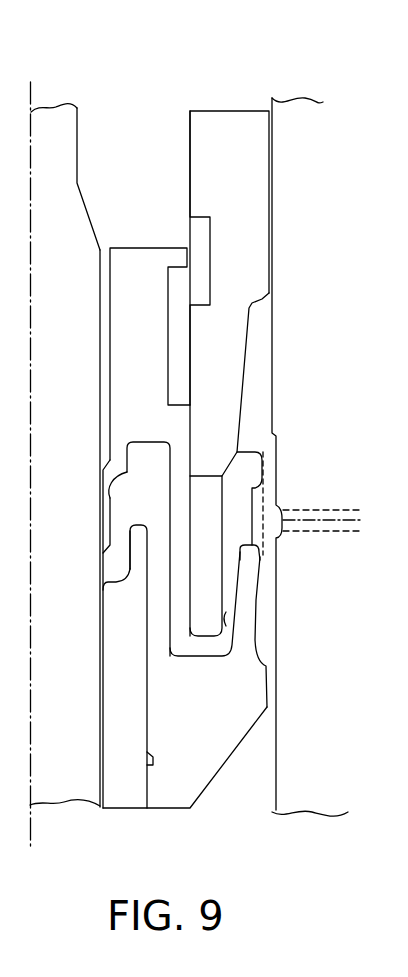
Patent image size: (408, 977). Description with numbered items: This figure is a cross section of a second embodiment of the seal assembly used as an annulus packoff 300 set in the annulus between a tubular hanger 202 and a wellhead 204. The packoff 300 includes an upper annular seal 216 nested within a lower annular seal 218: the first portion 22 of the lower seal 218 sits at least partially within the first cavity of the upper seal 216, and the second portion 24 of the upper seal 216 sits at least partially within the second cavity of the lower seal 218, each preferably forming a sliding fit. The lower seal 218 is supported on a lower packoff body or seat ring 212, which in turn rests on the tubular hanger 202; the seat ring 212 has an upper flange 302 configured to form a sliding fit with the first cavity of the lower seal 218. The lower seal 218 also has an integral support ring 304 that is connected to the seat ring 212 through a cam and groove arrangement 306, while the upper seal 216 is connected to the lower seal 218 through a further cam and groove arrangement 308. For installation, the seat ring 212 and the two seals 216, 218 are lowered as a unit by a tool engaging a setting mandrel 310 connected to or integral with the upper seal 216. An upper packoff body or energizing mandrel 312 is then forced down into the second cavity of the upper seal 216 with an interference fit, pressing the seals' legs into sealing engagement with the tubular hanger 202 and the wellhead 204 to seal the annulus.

The packoff 300 is at (275, 100).
The setting mandrel 310 is at (143, 262).
The energizing mandrel 312 is at (249, 334).
The cam and groove arrangement 308 is at (174, 536).
The upper annular seal 216 is at (100, 330).
The tubular hanger 202 is at (78, 779).
The wellhead 204 is at (328, 779).
The first portion 22 is at (150, 447).
The second portion 24 is at (214, 652).
The upper flange 302 is at (133, 546).
The seat ring 212 is at (125, 803).
The lower annular seal 218 is at (262, 680).
The integral support ring 304 is at (213, 763).
The cam and groove arrangement 306 is at (156, 750).